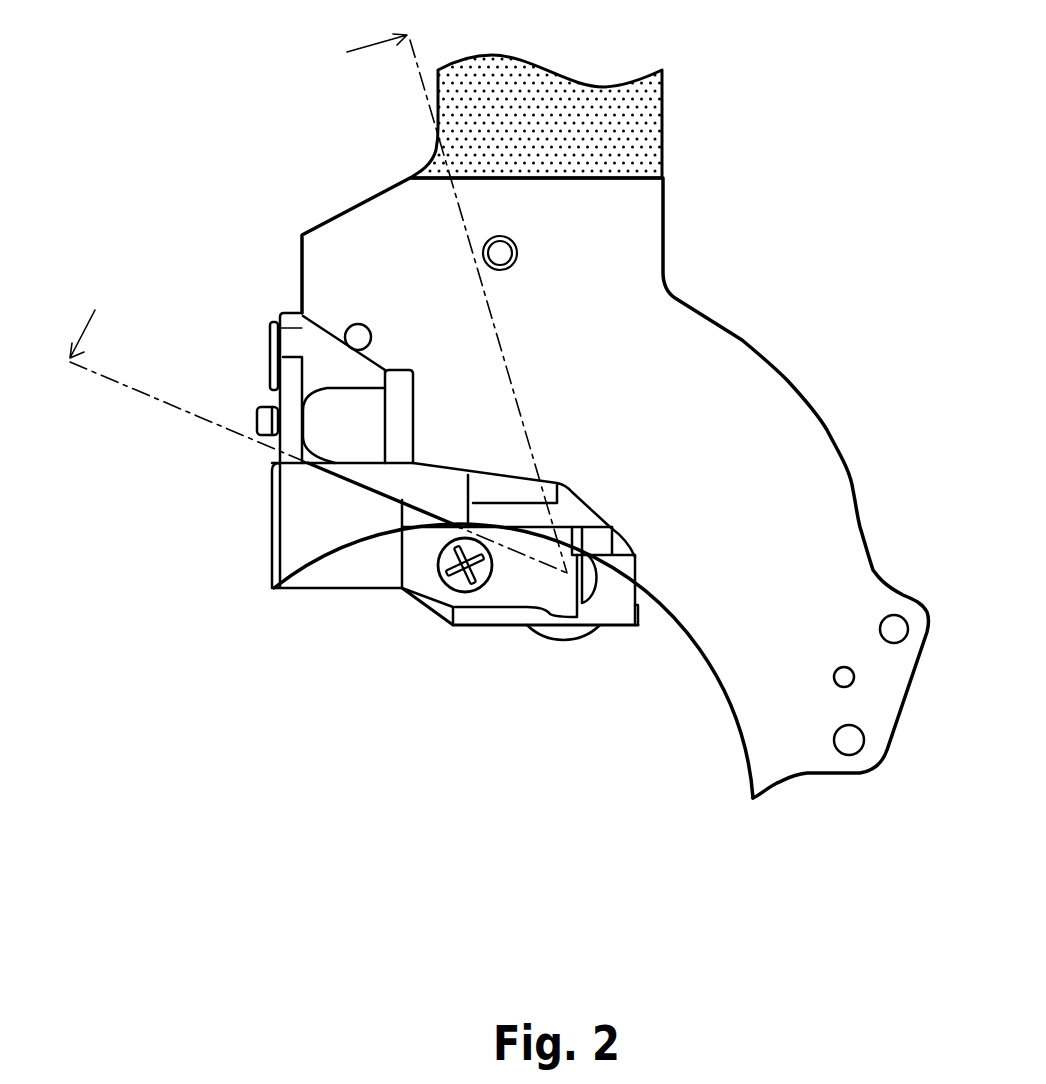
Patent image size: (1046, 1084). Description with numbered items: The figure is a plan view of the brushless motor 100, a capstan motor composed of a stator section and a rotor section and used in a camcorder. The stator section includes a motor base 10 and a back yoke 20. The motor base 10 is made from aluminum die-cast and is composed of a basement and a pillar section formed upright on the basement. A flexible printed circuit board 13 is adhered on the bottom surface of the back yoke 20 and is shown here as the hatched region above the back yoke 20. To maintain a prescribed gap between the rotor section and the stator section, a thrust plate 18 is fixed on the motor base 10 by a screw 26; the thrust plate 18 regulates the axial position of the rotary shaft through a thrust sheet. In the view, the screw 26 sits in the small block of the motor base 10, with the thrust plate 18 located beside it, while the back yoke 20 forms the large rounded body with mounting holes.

The brushless motor 100 is at (499, 442).
The back yoke 20 is at (643, 248).
The flexible printed circuit board 13 is at (645, 128).
The motor base 10 is at (480, 618).
The thrust plate 18 is at (512, 590).
The screw 26 is at (437, 572).